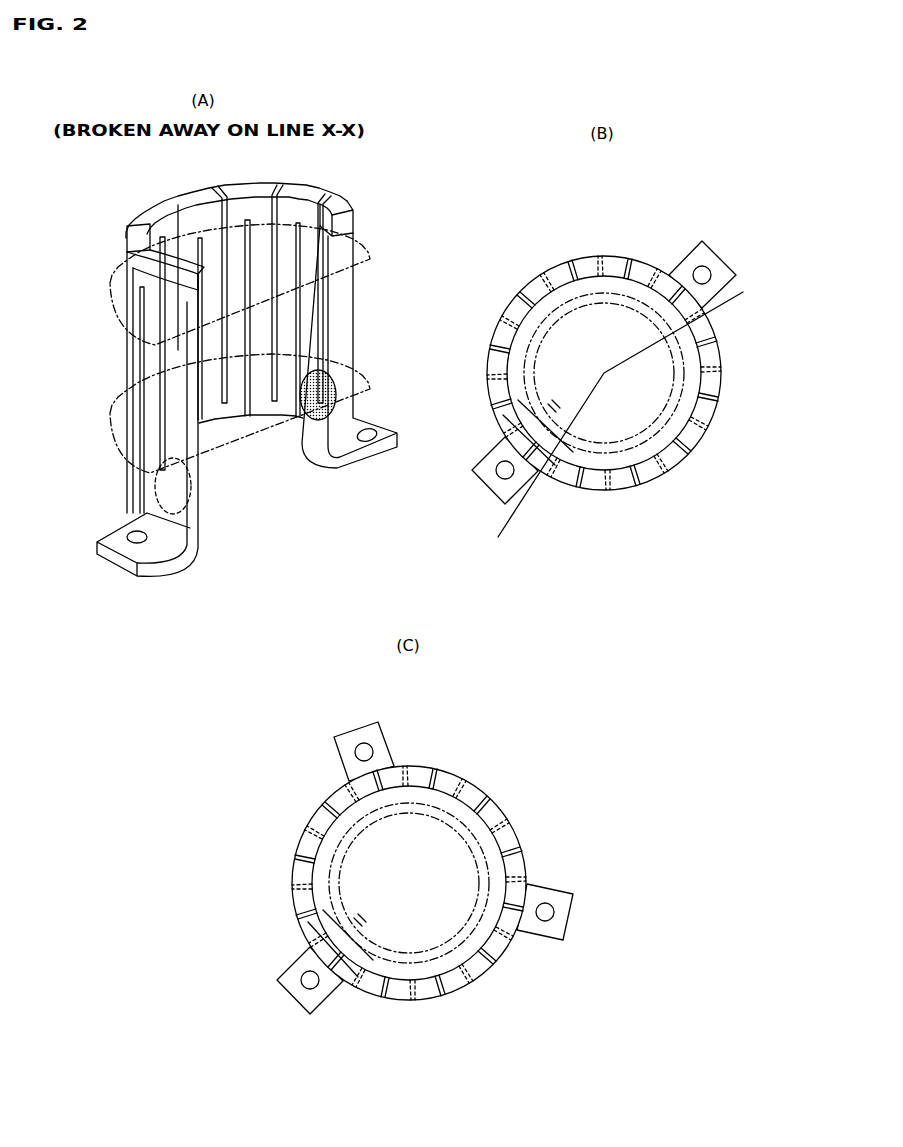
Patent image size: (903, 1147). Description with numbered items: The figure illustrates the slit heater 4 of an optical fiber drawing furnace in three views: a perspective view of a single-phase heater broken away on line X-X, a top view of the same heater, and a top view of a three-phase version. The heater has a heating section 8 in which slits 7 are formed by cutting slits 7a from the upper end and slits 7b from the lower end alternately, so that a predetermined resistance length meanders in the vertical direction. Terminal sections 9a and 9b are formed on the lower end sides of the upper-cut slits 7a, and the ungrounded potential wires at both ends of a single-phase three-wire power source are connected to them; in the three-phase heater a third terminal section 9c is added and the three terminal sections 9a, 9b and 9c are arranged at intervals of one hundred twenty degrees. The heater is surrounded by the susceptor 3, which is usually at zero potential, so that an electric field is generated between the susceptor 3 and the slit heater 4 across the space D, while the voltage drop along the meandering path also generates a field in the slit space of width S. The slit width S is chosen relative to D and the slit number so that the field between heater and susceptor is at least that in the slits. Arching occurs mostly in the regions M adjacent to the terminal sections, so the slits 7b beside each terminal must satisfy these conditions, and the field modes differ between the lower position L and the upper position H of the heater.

The susceptor 3 is at (648, 438).
The slit heater 4 is at (328, 186).
The slit 7 is at (256, 378).
The slit cut from the upper end 7a is at (160, 470).
The slit cut from the lower end 7b is at (137, 360).
The heating section 8 is at (190, 217).
The terminal section 9a is at (165, 548).
The terminal section 9b is at (367, 458).
The terminal section 9c is at (356, 738).
The upper position H is at (247, 284).
The lower position L is at (248, 413).
The region adjacent to the terminal sections M is at (195, 487).
The line X- X is at (627, 417).
The space between the slit heater and the susceptor D is at (503, 404).
The slit width S is at (557, 413).